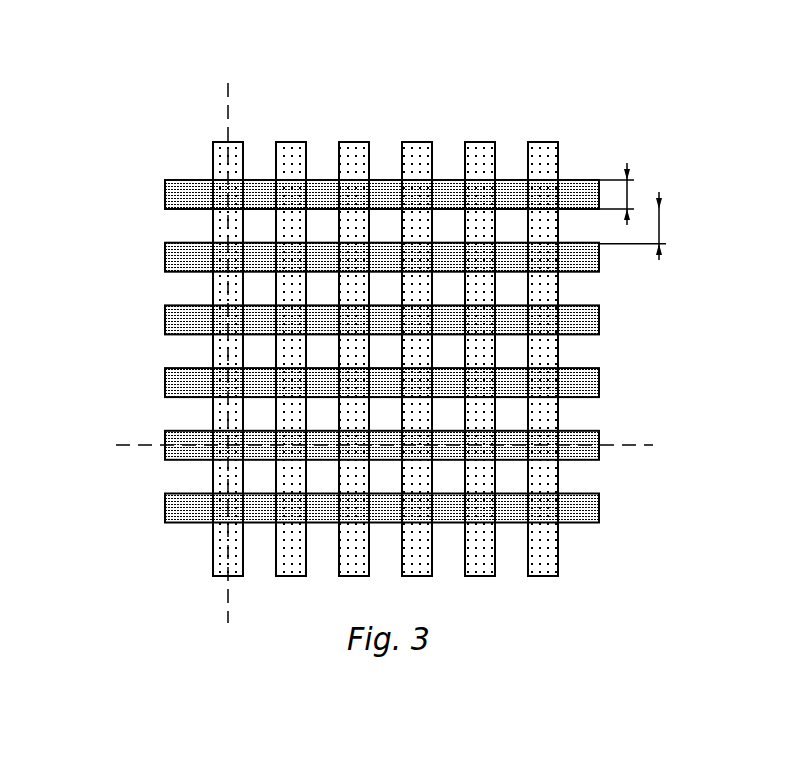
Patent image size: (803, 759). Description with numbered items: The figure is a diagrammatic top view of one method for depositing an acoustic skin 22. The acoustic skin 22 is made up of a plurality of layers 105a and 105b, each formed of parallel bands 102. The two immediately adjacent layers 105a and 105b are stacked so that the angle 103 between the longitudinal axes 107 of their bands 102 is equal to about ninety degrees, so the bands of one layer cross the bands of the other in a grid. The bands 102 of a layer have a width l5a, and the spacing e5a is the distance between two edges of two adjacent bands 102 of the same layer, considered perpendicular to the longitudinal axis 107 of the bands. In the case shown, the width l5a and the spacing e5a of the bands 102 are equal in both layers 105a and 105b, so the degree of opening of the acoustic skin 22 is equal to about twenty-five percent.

The acoustic skin 22 is at (579, 86).
The band 102 is at (221, 152).
The angle 103 is at (571, 180).
The layer 105a is at (180, 321).
The layer 105b is at (292, 148).
The longitudinal axis 107 is at (133, 443).
The width of the bands l5a is at (628, 193).
The spacing e5a is at (659, 225).